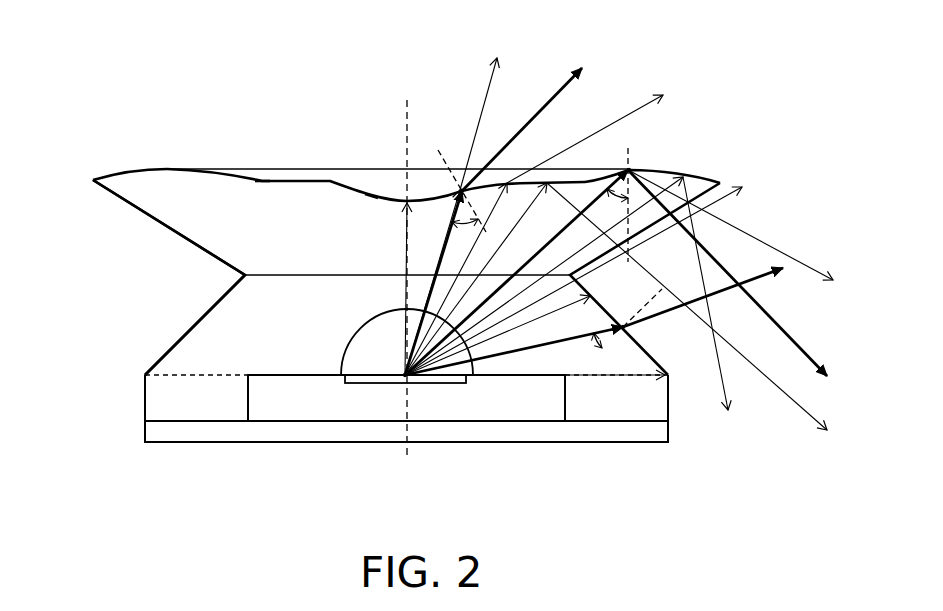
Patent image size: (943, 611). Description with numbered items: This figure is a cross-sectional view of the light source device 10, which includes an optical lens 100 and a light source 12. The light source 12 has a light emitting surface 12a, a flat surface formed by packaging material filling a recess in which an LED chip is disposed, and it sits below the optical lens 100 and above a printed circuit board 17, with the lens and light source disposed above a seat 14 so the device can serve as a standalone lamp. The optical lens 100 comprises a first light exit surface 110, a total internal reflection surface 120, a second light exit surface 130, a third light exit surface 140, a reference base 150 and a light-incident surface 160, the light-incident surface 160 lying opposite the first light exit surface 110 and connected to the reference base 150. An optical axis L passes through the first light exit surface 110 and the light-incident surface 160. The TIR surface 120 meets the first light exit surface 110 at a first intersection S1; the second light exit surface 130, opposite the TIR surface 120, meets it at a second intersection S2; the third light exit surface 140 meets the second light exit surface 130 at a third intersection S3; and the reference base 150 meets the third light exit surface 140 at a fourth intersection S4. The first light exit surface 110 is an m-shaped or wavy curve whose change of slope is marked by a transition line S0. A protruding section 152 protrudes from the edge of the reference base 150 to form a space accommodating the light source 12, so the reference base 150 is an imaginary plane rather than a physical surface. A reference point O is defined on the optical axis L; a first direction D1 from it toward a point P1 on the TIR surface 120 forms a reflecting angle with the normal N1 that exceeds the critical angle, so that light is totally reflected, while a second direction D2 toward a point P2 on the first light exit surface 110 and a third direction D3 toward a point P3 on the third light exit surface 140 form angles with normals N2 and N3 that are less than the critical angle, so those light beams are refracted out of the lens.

The optical lens 100 is at (90, 76).
The light source device 10 is at (812, 529).
The total internal reflection (TIR) surface 120 is at (162, 169).
The first light exit surface 110 is at (344, 187).
The second light exit surface 130 is at (157, 226).
The third light exit surface 140 is at (195, 322).
The reference base 150 is at (182, 380).
The protruding section 152 is at (152, 410).
The seat 14 is at (152, 433).
The light source 12 is at (375, 384).
The light emitting surface 12a is at (389, 372).
The light-incident surface 160 is at (463, 374).
The printed circuit board (PCB) 17 is at (519, 404).
The reference point O is at (414, 384).
The optical axis L is at (408, 263).
The transition line S0 is at (371, 192).
The first intersection S1 is at (262, 180).
The second intersection S2 is at (93, 180).
The third intersection S3 is at (243, 275).
The fourth intersection S4 is at (145, 375).
The first direction D1 is at (553, 242).
The second direction D2 is at (443, 252).
The third direction D3 is at (557, 341).
The normal of the TIR surface N1 is at (630, 188).
The normal of the first light exit surface N2 is at (451, 173).
The normal of the third light exit surface N3 is at (656, 293).
The point on the TIR surface P1 is at (634, 169).
The point on the first light exit surface P2 is at (463, 188).
The point on the third light exit surface P3 is at (630, 327).